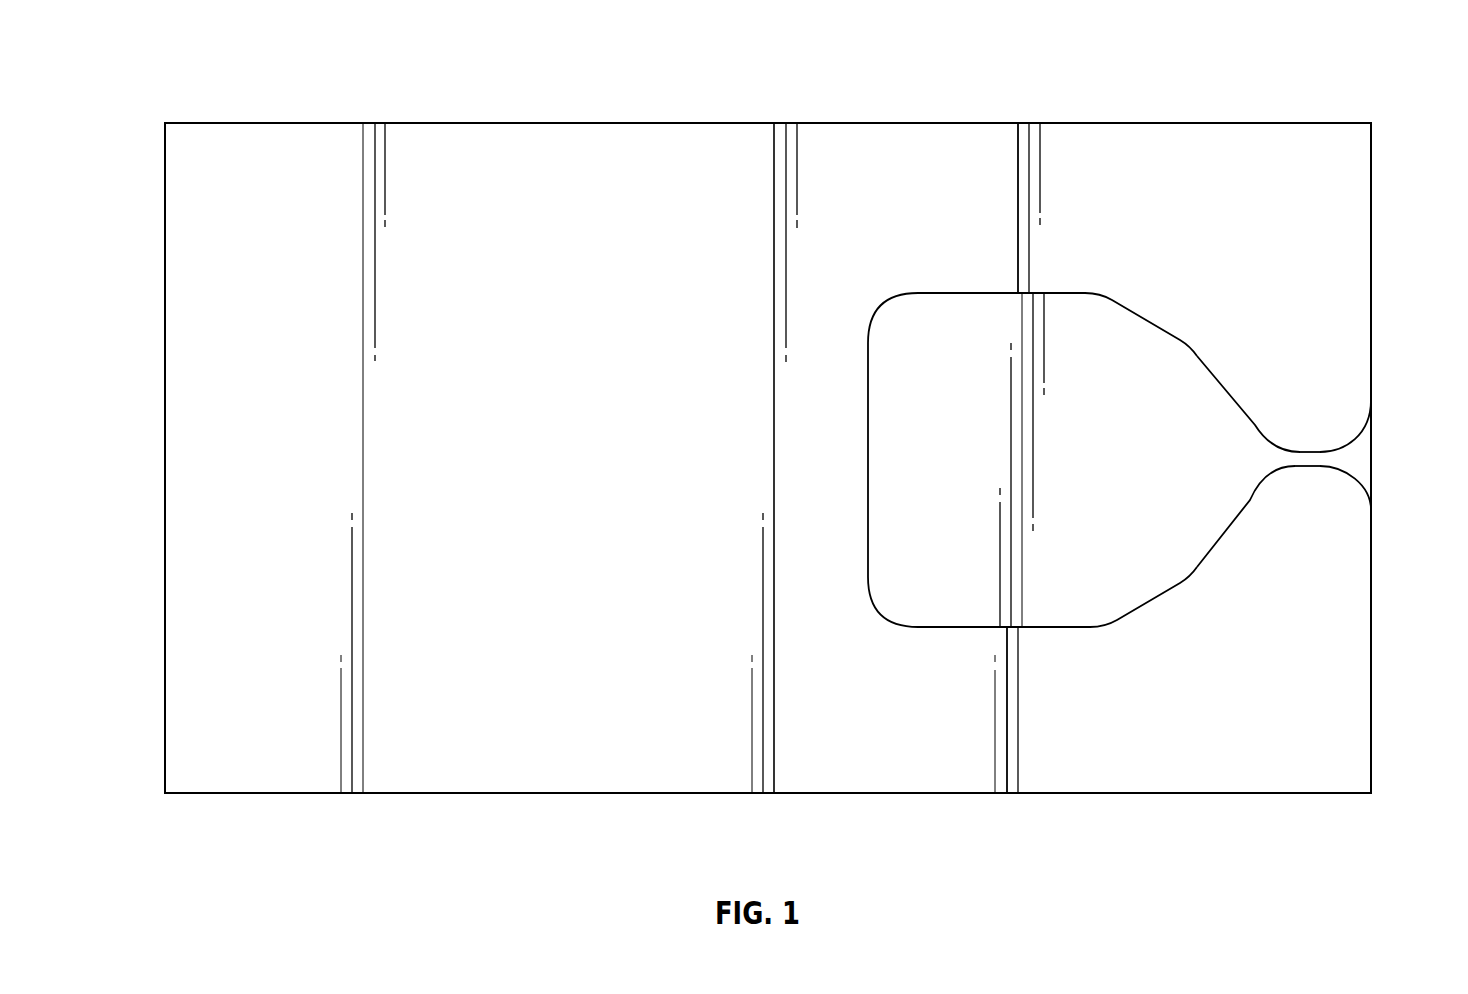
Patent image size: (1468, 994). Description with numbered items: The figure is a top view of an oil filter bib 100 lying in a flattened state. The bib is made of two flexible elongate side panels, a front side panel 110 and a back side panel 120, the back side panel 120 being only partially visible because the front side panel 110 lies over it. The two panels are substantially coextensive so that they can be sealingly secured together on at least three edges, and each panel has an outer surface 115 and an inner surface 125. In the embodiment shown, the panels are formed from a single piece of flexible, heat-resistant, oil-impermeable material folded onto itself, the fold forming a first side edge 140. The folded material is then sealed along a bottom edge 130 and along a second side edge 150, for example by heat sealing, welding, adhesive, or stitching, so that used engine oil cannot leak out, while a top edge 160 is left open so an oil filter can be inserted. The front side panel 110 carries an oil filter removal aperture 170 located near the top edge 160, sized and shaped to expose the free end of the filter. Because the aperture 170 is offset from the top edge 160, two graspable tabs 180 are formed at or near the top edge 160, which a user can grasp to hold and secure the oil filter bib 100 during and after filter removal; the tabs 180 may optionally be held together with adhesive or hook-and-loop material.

The oil filter bib 100 is at (1265, 64).
The front side panel 110 is at (503, 770).
The outer surface 115 is at (347, 770).
The back side panel 120 is at (1140, 337).
The inner surface 125 is at (1192, 392).
The bottom edge 130 is at (165, 458).
The first side edge 140 is at (695, 122).
The second side edge 150 is at (610, 793).
The top edge 160 is at (1372, 464).
The oil filter removal aperture 170 is at (940, 627).
The graspable tabs 180 is at (1325, 405).